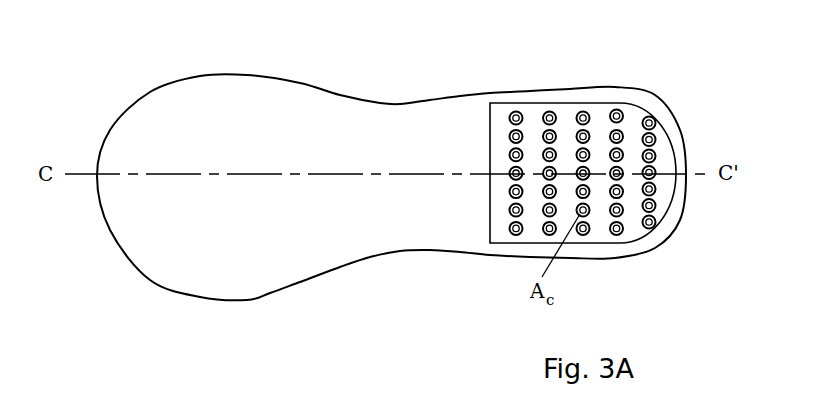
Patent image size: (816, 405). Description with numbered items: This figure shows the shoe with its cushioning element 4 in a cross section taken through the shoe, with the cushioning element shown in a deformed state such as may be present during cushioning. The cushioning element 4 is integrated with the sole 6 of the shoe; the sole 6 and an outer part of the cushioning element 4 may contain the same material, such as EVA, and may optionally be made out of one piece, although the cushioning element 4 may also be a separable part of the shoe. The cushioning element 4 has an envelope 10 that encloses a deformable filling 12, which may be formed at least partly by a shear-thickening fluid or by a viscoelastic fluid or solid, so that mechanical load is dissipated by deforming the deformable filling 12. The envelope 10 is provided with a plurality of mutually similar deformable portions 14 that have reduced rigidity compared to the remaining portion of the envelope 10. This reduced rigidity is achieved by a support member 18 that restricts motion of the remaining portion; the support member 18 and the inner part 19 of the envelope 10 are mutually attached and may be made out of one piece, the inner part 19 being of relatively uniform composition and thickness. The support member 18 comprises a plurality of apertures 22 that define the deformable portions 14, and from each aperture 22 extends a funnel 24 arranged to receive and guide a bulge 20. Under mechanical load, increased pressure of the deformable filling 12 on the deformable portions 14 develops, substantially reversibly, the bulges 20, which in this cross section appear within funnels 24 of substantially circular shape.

The cushioning element 4 is at (501, 104).
The sole 6 is at (447, 128).
The envelope 10 is at (618, 160).
The deformable filling 12 is at (513, 232).
The deformable portion 14 is at (611, 160).
The support member 18 is at (665, 150).
The inner part 19 is at (611, 160).
The bulge 20 is at (583, 111).
The aperture 22 is at (704, 204).
The funnel 24 is at (655, 192).